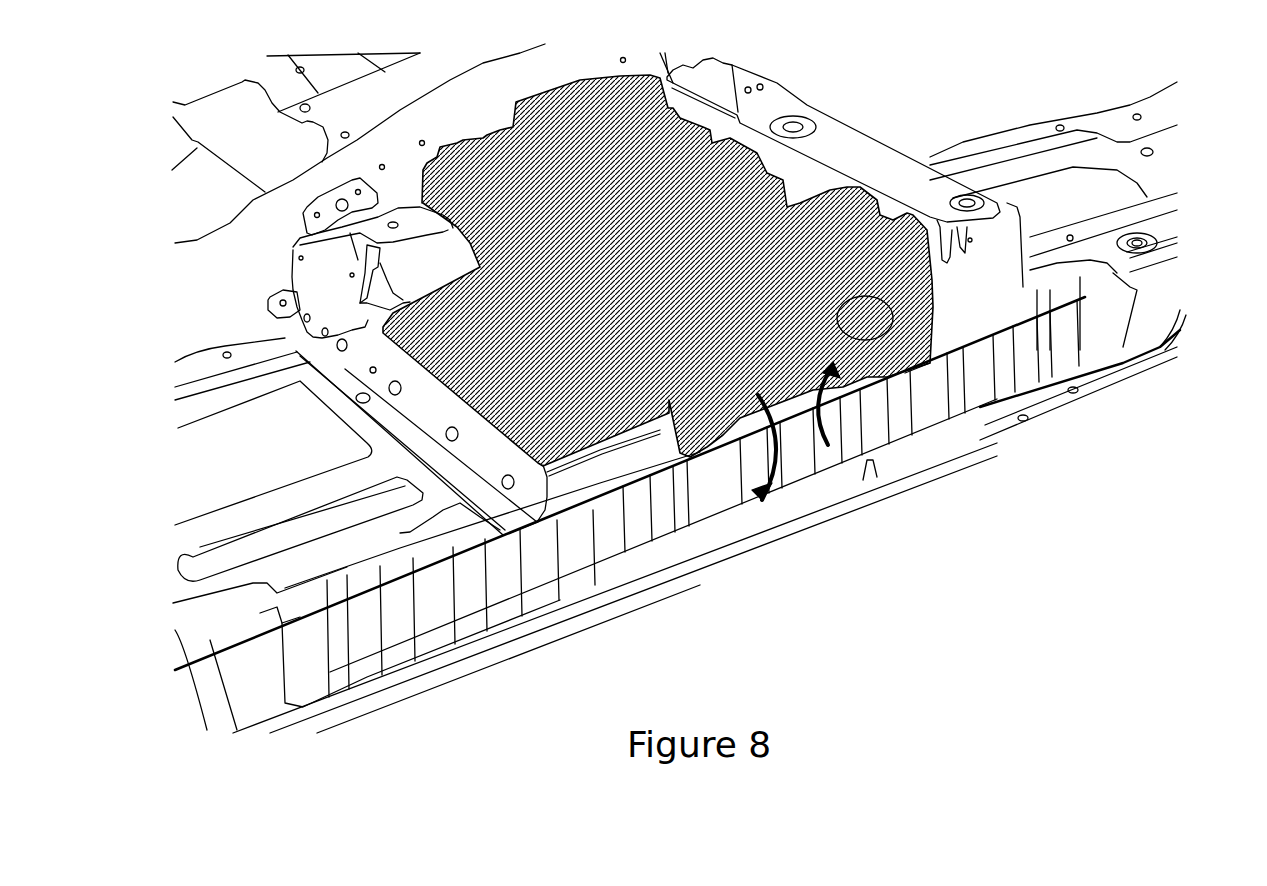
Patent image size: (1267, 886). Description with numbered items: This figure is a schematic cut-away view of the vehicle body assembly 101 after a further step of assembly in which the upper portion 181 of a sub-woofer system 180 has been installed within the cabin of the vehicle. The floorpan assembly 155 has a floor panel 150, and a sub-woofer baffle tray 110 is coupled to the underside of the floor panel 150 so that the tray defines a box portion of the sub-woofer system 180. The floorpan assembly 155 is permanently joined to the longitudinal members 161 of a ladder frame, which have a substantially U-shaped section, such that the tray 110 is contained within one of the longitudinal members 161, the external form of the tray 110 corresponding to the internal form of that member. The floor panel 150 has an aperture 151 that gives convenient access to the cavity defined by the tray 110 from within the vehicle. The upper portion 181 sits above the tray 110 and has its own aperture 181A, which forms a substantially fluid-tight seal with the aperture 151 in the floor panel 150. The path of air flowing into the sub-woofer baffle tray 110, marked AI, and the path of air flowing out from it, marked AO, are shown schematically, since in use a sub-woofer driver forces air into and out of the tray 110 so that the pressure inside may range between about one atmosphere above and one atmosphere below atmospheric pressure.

The vehicle body assembly 101 is at (1153, 425).
The sub-woofer baffle tray 110 is at (1120, 315).
The floor panel 150 is at (1164, 230).
The aperture 151 is at (905, 373).
The floorpan assembly 155 is at (477, 125).
The longitudinal member 161 is at (478, 653).
The sub-woofer system 180 is at (316, 430).
The upper portion 181 is at (703, 450).
The aperture 181A is at (723, 443).
The air flow into the tray AI is at (777, 473).
The air flow out from the tray AO is at (890, 487).